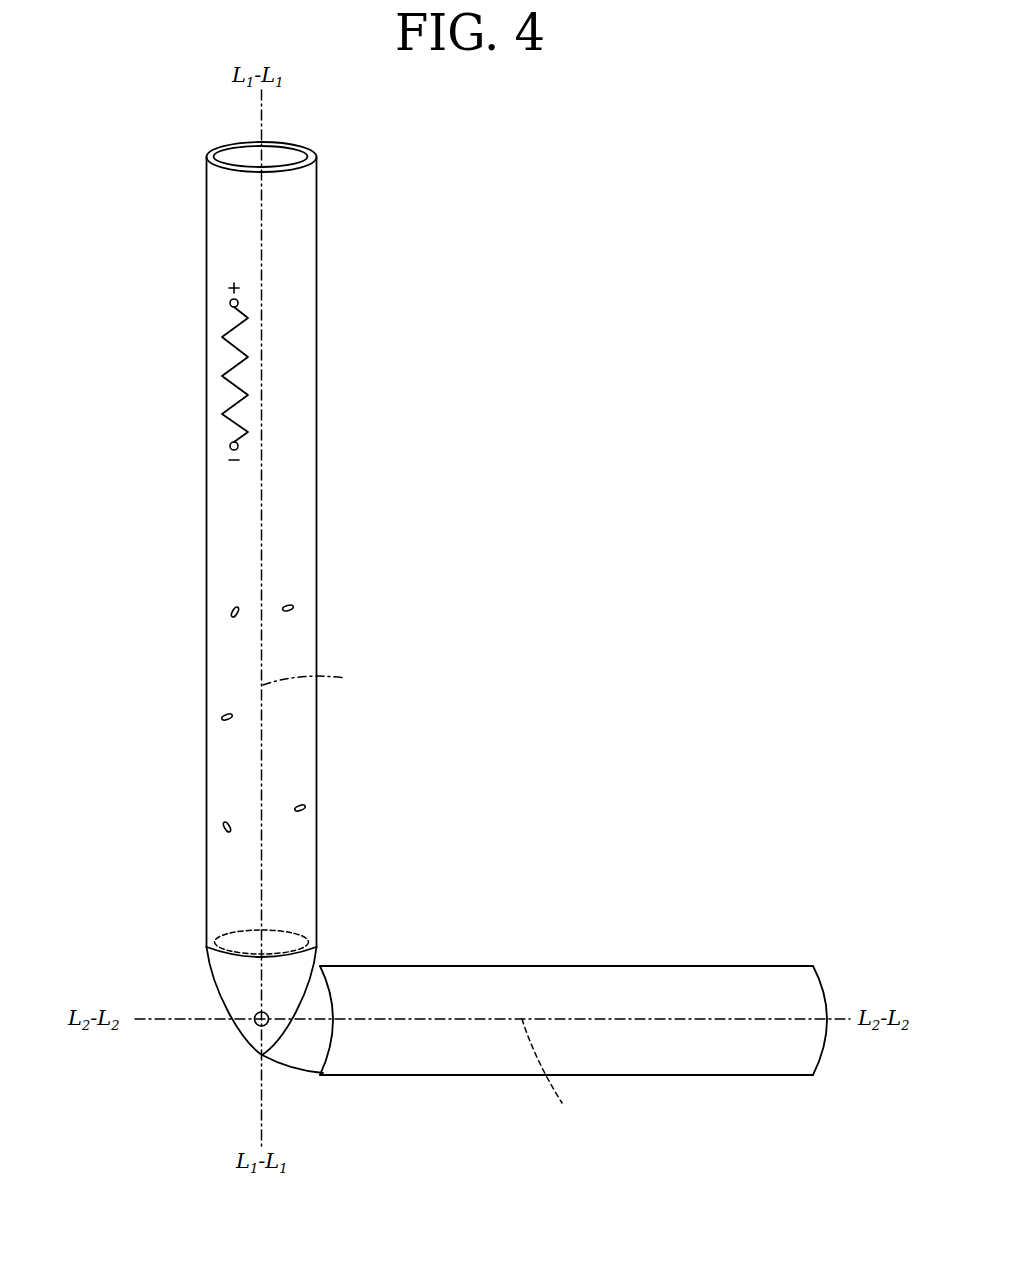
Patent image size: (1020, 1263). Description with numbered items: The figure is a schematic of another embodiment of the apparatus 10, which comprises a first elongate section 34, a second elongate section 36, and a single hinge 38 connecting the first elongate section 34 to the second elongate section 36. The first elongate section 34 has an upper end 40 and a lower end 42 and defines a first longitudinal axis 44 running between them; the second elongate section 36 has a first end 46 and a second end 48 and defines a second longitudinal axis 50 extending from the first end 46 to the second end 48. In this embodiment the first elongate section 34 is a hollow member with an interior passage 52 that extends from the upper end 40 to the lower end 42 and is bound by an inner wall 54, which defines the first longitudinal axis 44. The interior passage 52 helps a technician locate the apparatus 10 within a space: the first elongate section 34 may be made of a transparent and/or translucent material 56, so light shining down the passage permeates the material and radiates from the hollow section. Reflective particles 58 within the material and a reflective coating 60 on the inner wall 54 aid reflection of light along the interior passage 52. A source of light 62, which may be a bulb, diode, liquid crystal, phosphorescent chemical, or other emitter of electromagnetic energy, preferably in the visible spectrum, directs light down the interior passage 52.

The apparatus 10 is at (594, 229).
The first elongate section 34 is at (317, 578).
The second elongate section 36 is at (525, 966).
The single hinge 38 is at (256, 1024).
The upper end 40 is at (206, 248).
The lower end 42 is at (206, 935).
The first longitudinal axis 44 is at (324, 680).
The first end 46 is at (345, 1075).
The second end 48 is at (745, 1075).
The second longitudinal axis 50 is at (562, 1074).
The interior passage 52 is at (278, 152).
The inner wall 54 is at (228, 148).
The transparent and/or translucent material 56 is at (317, 383).
The reflective particles 58 is at (232, 615).
The reflective coating 60 is at (312, 153).
The source of light 62 is at (228, 343).